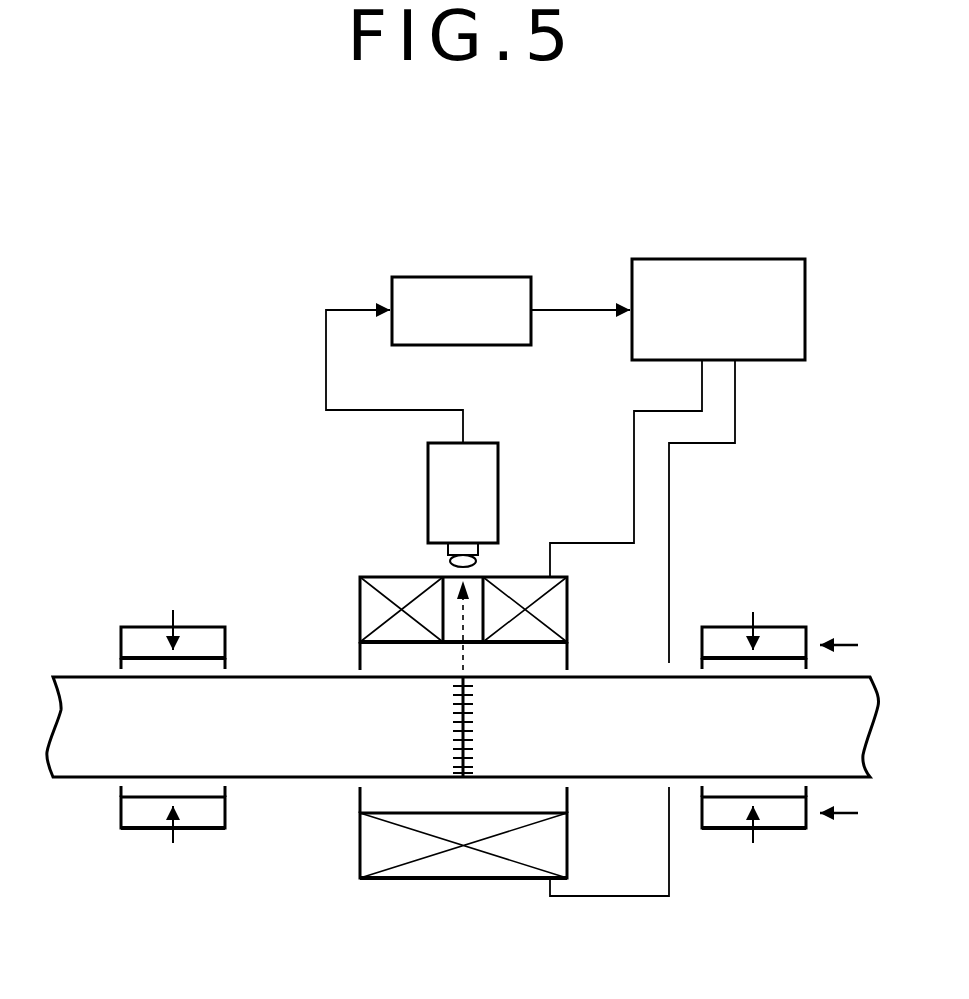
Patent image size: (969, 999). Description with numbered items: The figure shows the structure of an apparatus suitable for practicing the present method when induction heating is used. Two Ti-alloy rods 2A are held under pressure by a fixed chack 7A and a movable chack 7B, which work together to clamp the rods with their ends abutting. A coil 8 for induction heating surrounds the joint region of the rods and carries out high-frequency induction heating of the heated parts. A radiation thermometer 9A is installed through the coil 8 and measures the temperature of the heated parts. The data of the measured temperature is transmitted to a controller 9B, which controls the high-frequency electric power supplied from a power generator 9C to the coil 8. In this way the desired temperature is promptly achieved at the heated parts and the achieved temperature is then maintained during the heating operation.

The Ti-alloy rods 2A is at (235, 746).
The fixed chack 7A is at (120, 647).
The movable chack 7B is at (806, 637).
The coil 8 is at (370, 610).
The radiation thermometer 9A is at (477, 488).
The controller 9B is at (461, 311).
The power generator 9C is at (718, 309).